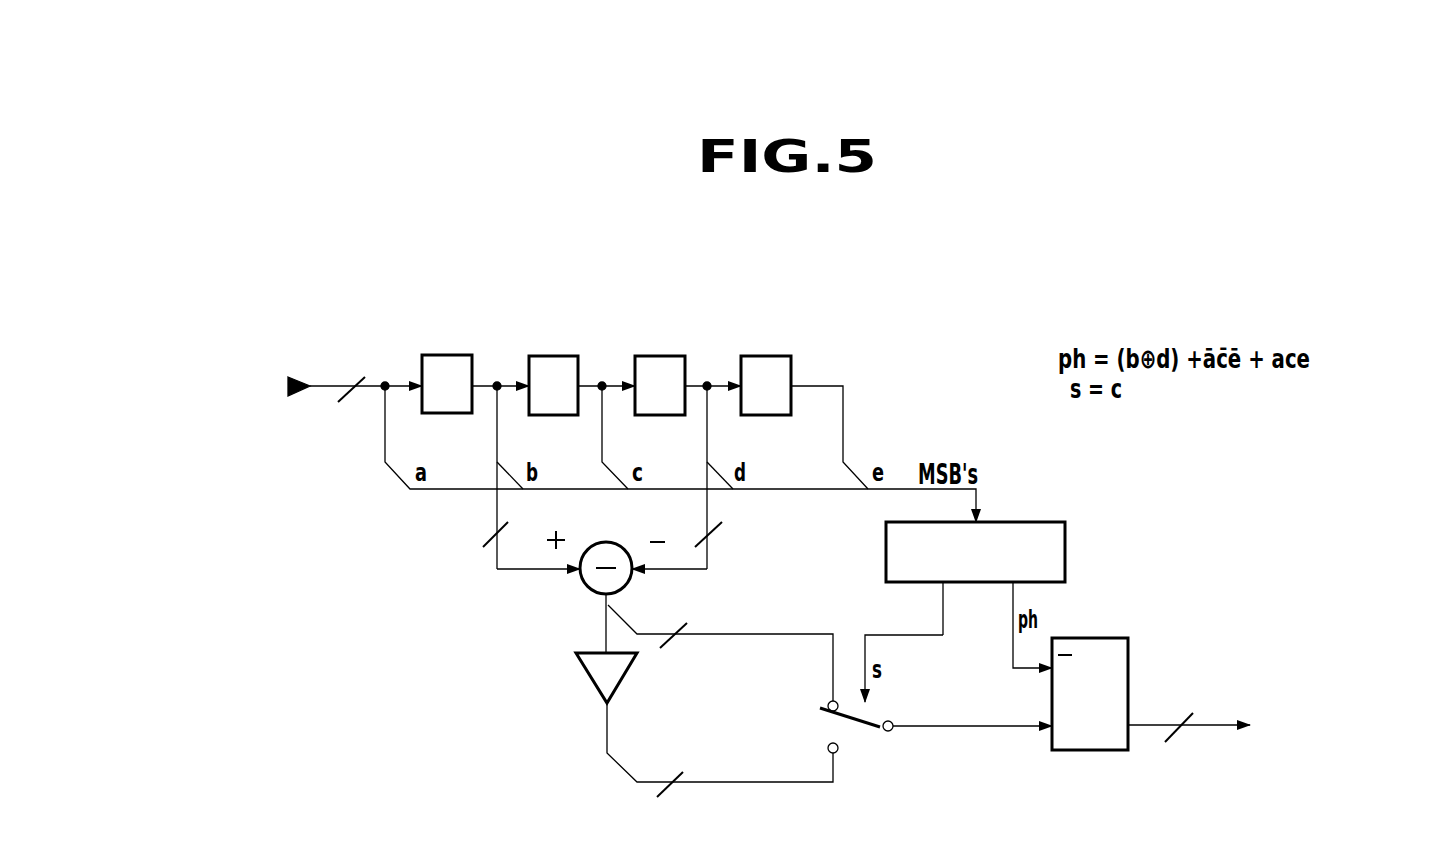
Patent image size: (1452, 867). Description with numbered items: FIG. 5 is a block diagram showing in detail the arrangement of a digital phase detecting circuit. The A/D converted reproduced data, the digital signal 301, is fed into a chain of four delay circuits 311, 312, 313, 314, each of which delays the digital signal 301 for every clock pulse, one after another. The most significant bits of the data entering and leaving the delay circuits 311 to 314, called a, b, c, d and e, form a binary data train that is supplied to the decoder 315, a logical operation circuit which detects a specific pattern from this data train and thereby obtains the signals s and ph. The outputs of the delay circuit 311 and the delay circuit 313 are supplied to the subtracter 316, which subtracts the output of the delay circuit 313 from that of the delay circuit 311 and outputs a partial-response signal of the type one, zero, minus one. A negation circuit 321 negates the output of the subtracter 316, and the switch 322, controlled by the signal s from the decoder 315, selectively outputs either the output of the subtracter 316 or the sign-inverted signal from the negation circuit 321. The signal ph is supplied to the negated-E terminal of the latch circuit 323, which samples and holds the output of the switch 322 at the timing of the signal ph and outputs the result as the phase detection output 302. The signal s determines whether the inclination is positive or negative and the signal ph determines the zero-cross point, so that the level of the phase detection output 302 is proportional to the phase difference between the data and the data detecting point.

The digital signal 301 is at (307, 377).
The phase detection output 302 is at (1210, 727).
The delay circuit 311 is at (453, 355).
The delay circuit 312 is at (563, 356).
The delay circuit 313 is at (670, 356).
The delay circuit 314 is at (778, 356).
The decoder 315 is at (1067, 538).
The subtracter 316 is at (580, 580).
The negation circuit 321 is at (580, 667).
The switch 322 is at (855, 733).
The latch circuit 323 is at (1098, 752).